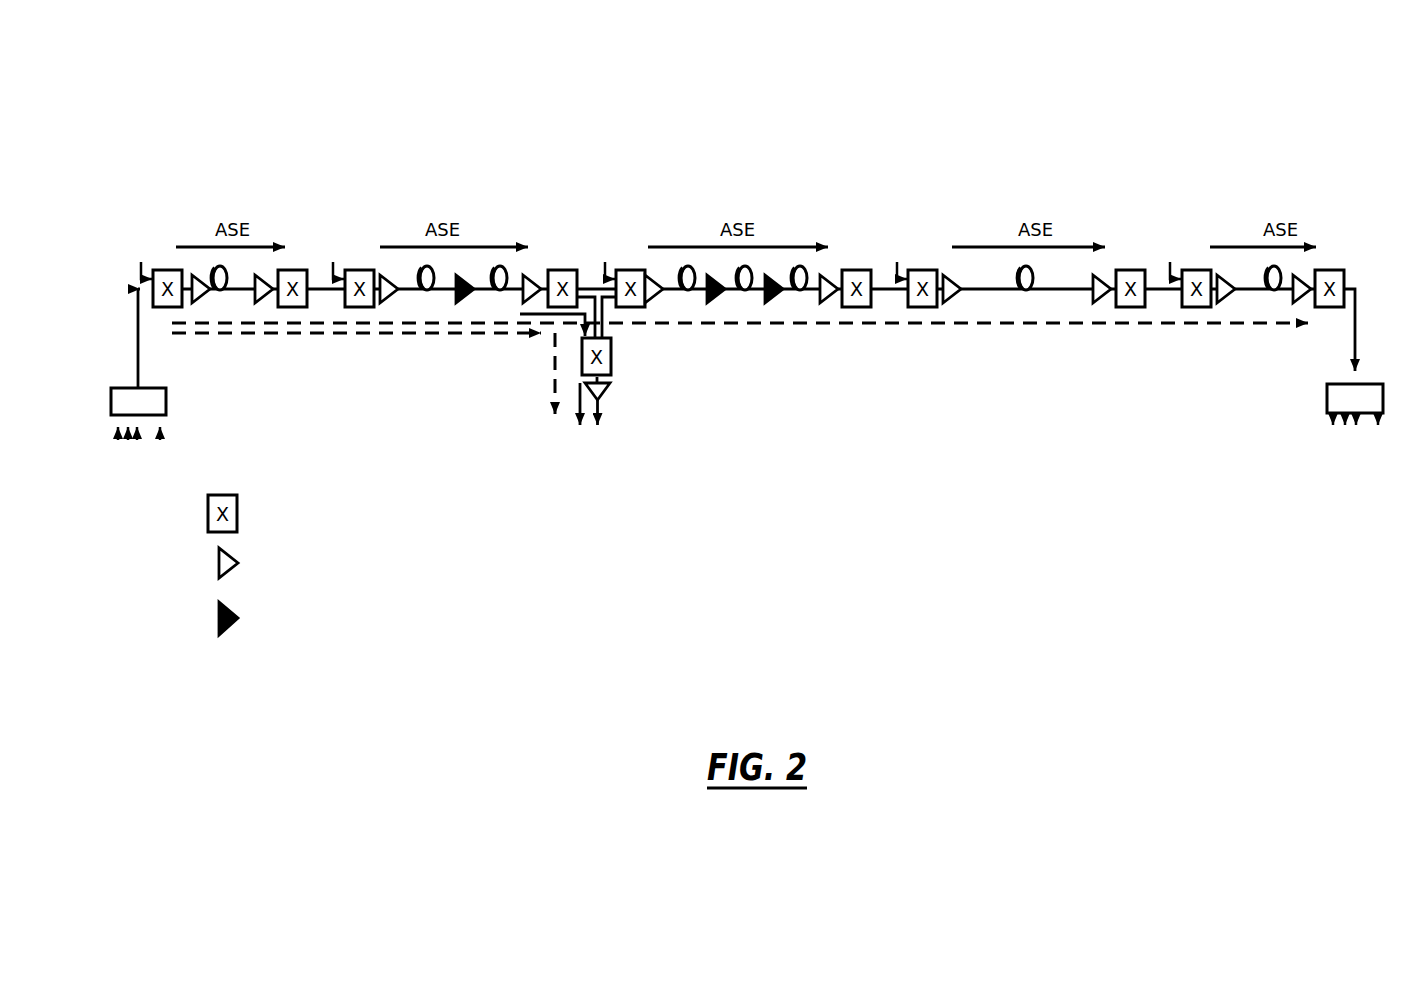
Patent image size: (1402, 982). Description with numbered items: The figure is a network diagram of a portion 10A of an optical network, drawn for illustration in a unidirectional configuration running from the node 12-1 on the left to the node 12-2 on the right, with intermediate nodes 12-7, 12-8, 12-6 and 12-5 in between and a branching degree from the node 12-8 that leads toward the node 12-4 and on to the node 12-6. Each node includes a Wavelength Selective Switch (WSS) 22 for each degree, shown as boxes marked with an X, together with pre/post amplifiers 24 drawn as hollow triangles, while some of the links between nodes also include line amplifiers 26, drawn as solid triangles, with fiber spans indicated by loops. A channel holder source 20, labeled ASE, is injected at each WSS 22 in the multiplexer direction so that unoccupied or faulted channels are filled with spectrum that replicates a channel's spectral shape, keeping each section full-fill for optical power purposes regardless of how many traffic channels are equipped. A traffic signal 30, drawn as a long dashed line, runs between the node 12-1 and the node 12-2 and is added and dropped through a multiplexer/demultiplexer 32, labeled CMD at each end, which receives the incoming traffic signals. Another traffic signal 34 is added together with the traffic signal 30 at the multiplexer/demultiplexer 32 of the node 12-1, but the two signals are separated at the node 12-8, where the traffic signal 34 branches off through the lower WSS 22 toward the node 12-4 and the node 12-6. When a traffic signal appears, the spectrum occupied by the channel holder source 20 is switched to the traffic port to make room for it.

The portion of the optical network 10A is at (842, 124).
The node 12-1 is at (126, 217).
The node 12-2 is at (1309, 217).
The node 12-4 is at (586, 456).
The node 12-5 is at (1093, 217).
The node 12-6 is at (833, 217).
The node 12-7 is at (260, 217).
The node 12-8 is at (520, 217).
The channel holder source 20 is at (122, 259).
The Wavelength Selective Switch 22 is at (265, 513).
The pre/post amplifier 24 is at (342, 563).
The line amplifier 26 is at (317, 618).
The traffic signal 30 is at (777, 324).
The multiplexer/demultiplexer 32 is at (111, 428).
The traffic signal 34 is at (486, 336).